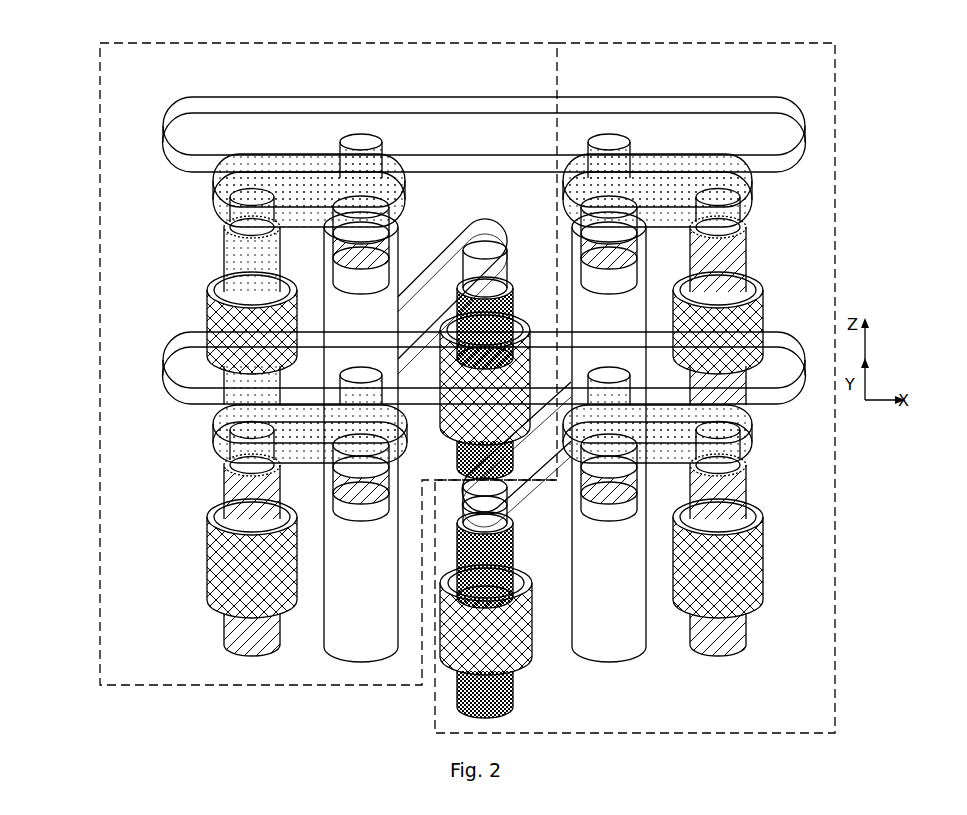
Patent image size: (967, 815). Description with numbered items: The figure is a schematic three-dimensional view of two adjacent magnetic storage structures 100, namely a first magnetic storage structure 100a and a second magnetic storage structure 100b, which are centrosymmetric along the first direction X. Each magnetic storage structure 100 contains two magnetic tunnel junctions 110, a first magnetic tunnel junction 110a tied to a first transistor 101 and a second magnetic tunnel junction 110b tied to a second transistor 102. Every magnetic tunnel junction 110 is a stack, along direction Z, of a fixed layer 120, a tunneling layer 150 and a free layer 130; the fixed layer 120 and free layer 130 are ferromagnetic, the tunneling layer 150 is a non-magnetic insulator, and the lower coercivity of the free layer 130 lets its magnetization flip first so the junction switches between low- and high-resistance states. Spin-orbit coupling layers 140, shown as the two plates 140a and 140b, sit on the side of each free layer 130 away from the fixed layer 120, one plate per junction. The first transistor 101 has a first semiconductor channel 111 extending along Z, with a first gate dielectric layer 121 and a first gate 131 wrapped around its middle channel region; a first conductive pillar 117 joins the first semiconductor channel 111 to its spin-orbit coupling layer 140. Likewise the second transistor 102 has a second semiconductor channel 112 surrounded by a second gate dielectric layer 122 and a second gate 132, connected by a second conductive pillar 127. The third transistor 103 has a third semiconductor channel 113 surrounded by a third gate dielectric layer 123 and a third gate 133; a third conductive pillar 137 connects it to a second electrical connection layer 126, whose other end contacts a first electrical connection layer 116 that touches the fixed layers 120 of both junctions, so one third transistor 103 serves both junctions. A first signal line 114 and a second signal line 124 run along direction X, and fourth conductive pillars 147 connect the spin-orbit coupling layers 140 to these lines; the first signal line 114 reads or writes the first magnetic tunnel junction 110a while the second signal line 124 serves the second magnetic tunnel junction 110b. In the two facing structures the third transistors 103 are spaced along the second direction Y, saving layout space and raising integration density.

The magnetic storage structure 100 is at (467, 385).
The first magnetic storage structure 100a is at (98, 126).
The second magnetic storage structure 100b is at (836, 112).
The first transistor 101 is at (213, 310).
The second transistor 102 is at (212, 555).
The third transistor 103 is at (532, 620).
The magnetic tunnel junction 110 is at (410, 434).
The first magnetic tunnel junction 110a is at (455, 183).
The second magnetic tunnel junction 110b is at (366, 471).
The first semiconductor channel 111 is at (250, 238).
The second semiconductor channel 112 is at (238, 498).
The third semiconductor channel 113 is at (502, 687).
The first signal line 114 is at (777, 123).
The first electrical connection layer 116 is at (340, 633).
The first conductive pillar 117 is at (258, 238).
The fixed layer 120 is at (378, 271).
The first gate dielectric layer 121 is at (238, 263).
The second gate dielectric layer 122 is at (222, 523).
The third gate dielectric layer 123 is at (500, 631).
The second signal line 124 is at (777, 357).
The second electrical connection layer 126 is at (492, 244).
The second conductive pillar 127 is at (257, 471).
The free layer 130 is at (364, 239).
The first gate 131 is at (226, 323).
The second gate 132 is at (226, 558).
The third gate 133 is at (503, 639).
The third conductive pillar 137 is at (500, 528).
The spin-orbit coupling layer 140 is at (427, 308).
The spin-orbit coupling layer 140a is at (240, 203).
The spin-orbit coupling layer 140b is at (243, 453).
The fourth conductive pillar 147 is at (362, 186).
The tunneling layer 150 is at (376, 258).